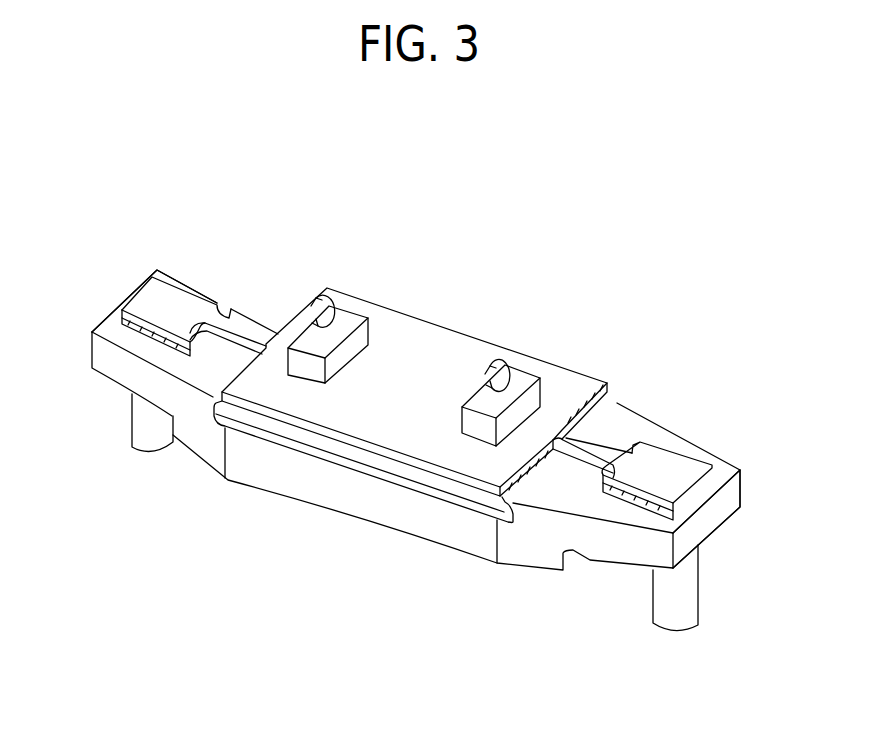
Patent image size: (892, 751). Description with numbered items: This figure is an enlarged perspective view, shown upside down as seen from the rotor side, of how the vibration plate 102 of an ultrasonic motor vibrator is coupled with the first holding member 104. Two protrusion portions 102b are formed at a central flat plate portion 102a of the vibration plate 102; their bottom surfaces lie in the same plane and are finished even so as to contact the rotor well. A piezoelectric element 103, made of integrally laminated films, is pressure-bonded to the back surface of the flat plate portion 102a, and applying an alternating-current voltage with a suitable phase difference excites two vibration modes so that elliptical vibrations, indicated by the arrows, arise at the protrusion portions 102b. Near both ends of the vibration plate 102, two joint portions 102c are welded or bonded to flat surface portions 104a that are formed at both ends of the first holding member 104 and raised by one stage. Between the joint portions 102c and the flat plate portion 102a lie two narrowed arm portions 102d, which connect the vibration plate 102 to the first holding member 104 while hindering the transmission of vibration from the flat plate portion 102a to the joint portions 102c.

The vibration plate 102 is at (419, 369).
The flat plate portion 102a is at (450, 363).
The protrusion portions 102b is at (353, 318).
The joint portions 102c is at (178, 292).
The arm portions 102d is at (255, 332).
The piezoelectric element 103 is at (277, 424).
The first holding member 104 is at (436, 440).
The flat surface portions 104a is at (125, 294).